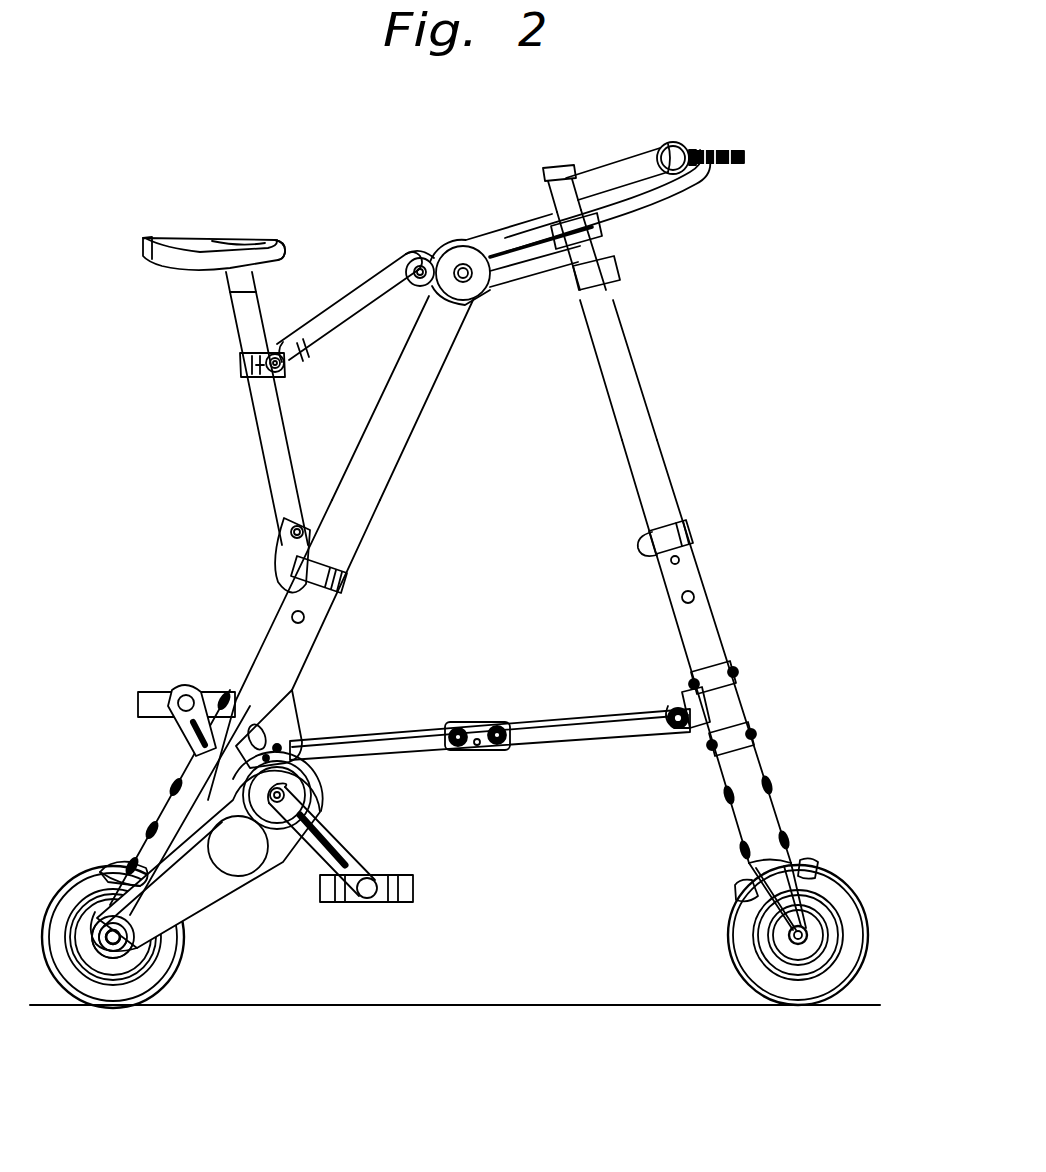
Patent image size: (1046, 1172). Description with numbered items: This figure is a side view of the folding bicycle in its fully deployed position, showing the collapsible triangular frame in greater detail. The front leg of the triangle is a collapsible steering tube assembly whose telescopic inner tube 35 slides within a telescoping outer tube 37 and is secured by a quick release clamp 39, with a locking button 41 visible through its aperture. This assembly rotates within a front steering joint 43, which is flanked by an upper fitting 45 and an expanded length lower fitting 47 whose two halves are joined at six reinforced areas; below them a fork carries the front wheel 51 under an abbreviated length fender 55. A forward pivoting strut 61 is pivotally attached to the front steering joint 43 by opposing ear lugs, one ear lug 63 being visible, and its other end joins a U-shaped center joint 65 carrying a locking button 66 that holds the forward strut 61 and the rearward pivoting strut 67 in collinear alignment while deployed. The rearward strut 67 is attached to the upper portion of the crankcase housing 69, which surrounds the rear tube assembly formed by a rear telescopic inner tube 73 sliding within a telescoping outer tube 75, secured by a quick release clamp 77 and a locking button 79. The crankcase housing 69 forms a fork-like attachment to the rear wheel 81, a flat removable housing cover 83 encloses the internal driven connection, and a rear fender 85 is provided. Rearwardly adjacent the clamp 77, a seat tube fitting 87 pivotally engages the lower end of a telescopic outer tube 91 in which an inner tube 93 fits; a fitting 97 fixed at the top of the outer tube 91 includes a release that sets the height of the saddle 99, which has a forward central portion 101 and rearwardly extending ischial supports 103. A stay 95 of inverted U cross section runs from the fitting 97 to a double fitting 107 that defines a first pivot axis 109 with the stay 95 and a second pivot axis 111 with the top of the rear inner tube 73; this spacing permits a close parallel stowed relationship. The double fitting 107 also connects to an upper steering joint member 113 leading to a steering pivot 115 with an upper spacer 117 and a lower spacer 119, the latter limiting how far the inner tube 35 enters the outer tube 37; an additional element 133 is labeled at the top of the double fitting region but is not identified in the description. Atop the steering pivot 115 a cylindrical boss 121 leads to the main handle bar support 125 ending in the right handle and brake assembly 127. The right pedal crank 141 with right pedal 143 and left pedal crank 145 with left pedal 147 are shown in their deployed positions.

The telescopic inner tube 35 is at (658, 398).
The telescoping outer tube 37 is at (716, 628).
The quick release clamp 39 is at (694, 539).
The locking button 41 is at (696, 598).
The front steering joint 43 is at (748, 702).
The upper fitting 45 is at (738, 674).
The lower fitting 47 is at (760, 758).
The front wheel 51 is at (832, 876).
The fender 55 is at (812, 858).
The forward pivoting strut 61 is at (540, 712).
The ear lug 63 is at (678, 730).
The center joint 65 is at (462, 722).
The locking button 66 is at (477, 750).
The rearward pivoting strut 67 is at (375, 741).
The crankcase housing 69 is at (182, 788).
The rear telescopic inner tube 73 is at (415, 447).
The telescoping outer tube 75 is at (308, 640).
The quick release clamp 77 is at (348, 580).
The locking button 79 is at (292, 616).
The rear wheel 81 is at (164, 980).
The removable housing cover 83 is at (188, 908).
The rear fender 85 is at (130, 862).
The seat tube fitting 87 is at (282, 542).
The telescopic outer tube 91 is at (266, 440).
The inner tube 93 is at (262, 296).
The stay 95 is at (343, 300).
The fitting 97 is at (240, 366).
The saddle 99 is at (288, 250).
The forward central portion 101 is at (247, 238).
The ischial supports 103 is at (150, 238).
The double fitting 107 is at (426, 252).
The first pivot axis 109 is at (414, 266).
The second pivot axis 111 is at (470, 288).
The upper steering joint member 113 is at (515, 244).
The steering pivot 115 is at (606, 243).
The upper spacer 117 is at (592, 215).
The lower spacer 119 is at (616, 280).
The boss 121 is at (556, 176).
The main handle bar support 125 is at (615, 170).
The right handle and brake assembly 127 is at (765, 134).
The pivot housing 133 is at (465, 240).
The right pedal crank 141 is at (344, 845).
The right pedal 143 is at (413, 886).
The left pedal crank 145 is at (180, 728).
The left pedal 147 is at (158, 690).